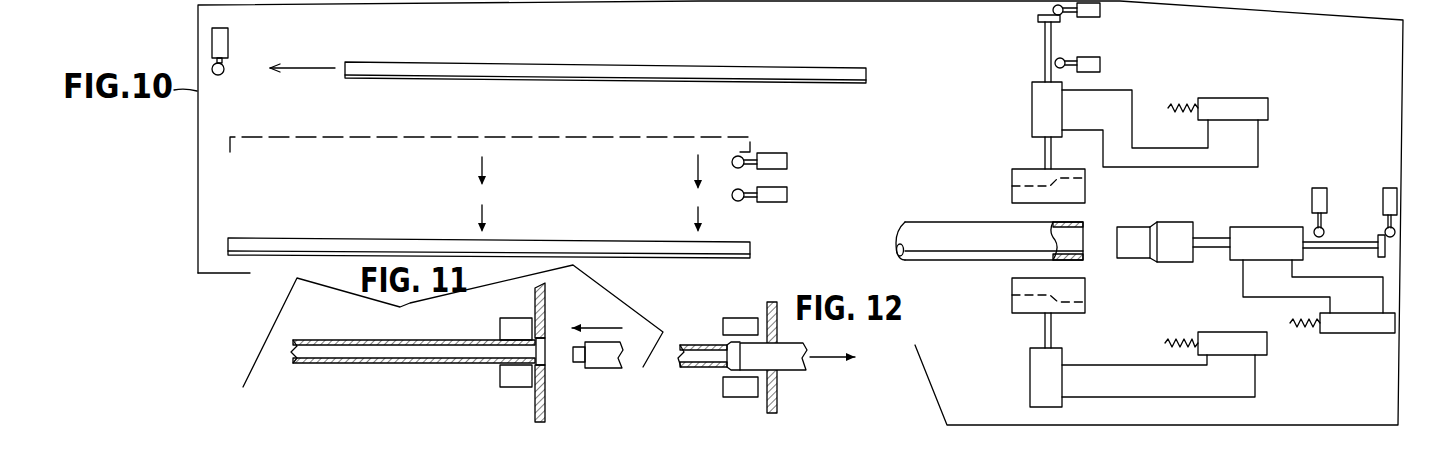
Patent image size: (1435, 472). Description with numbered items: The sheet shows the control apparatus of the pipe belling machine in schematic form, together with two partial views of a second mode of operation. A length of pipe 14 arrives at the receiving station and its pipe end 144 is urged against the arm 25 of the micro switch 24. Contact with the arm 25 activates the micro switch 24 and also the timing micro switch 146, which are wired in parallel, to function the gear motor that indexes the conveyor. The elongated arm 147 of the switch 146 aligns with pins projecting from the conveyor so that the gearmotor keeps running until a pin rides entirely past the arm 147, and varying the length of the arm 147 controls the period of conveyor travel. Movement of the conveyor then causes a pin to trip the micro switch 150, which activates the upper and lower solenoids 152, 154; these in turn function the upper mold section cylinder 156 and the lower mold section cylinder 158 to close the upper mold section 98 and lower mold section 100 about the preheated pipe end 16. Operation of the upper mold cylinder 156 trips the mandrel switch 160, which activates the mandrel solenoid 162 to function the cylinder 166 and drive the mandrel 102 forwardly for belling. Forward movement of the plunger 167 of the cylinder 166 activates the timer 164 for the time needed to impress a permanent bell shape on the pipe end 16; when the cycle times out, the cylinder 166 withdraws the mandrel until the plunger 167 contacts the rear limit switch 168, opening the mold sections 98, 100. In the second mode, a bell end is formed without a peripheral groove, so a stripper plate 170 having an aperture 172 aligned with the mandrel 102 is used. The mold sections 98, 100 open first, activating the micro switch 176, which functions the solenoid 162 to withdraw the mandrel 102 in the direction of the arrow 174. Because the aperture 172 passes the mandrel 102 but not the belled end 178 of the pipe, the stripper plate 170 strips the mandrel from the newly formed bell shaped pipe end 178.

In FIG. 10, the pipe 14 is at (648, 76).
In FIG. 11, the pipe 14 is at (320, 340).
In FIG. 12, the pipe 14 is at (704, 344).
In FIG. 10, the pipe end 16 is at (1082, 222).
In FIG. 10, the micro switch 24 is at (228, 46).
In FIG. 10, the arm 25 is at (223, 74).
In FIG. 10, the upper mold section 98 is at (1010, 182).
In FIG. 11, the upper mold section 98 is at (500, 330).
In FIG. 12, the upper mold section 98 is at (732, 318).
In FIG. 10, the lower mold section 100 is at (1008, 313).
In FIG. 11, the lower mold section 100 is at (500, 378).
In FIG. 12, the lower mold section 100 is at (723, 390).
In FIG. 10, the mandrel 102 is at (1140, 230).
In FIG. 11, the mandrel 102 is at (602, 360).
In FIG. 12, the mandrel 102 is at (789, 368).
In FIG. 10, the pipe end 144 is at (345, 73).
In FIG. 10, the timing micro switch 146 is at (786, 157).
In FIG. 10, the arm 147 is at (747, 156).
In FIG. 10, the micro switch 150 is at (787, 193).
In FIG. 10, the upper solenoid 152 is at (1262, 108).
In FIG. 10, the lower solenoid 154 is at (1263, 347).
In FIG. 10, the upper mold section cylinder 156 is at (1040, 117).
In FIG. 10, the lower mold section cylinder 158 is at (1040, 378).
In FIG. 10, the mandrel switch 160 is at (1102, 63).
In FIG. 10, the mandrel solenoid 162 is at (1365, 325).
In FIG. 10, the timer 164 is at (1318, 193).
In FIG. 10, the cylinder 166 is at (1263, 232).
In FIG. 10, the plunger 167 is at (1343, 241).
In FIG. 10, the rear limit switch 168 is at (1383, 200).
In FIG. 11, the stripper plate 170 is at (545, 314).
In FIG. 12, the stripper plate 170 is at (774, 303).
In FIG. 11, the aperture 172 is at (545, 360).
In FIG. 12, the arrow 174 is at (833, 347).
In FIG. 10, the micro switch 176 is at (1102, 8).
In FIG. 12, the belled end 178 is at (757, 371).